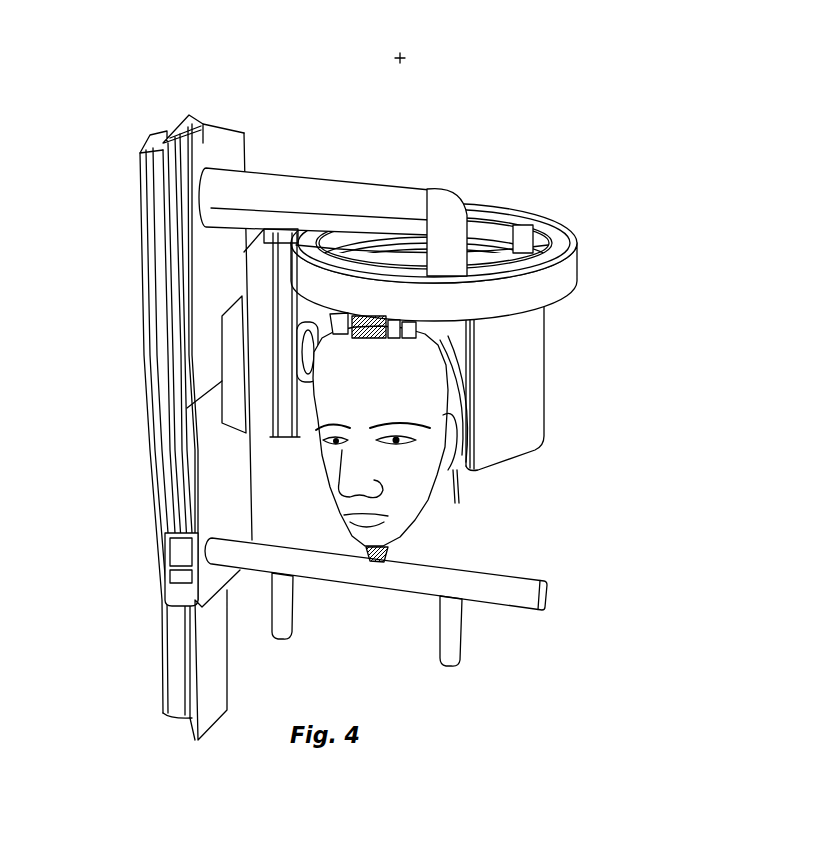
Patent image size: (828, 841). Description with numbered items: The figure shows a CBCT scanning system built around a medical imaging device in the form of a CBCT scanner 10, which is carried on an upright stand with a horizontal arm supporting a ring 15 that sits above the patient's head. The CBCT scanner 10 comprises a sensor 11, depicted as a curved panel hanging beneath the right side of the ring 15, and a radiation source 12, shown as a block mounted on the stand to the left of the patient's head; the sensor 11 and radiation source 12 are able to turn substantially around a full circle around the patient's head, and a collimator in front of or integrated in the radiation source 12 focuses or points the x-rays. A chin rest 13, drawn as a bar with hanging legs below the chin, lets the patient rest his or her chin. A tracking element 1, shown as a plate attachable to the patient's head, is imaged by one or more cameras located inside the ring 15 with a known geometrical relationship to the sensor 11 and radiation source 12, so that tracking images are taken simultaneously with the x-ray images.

The CBCT scanner 10 is at (429, 109).
The ring 15 is at (564, 206).
The sensor 11 is at (572, 363).
The radiation source 12 is at (246, 350).
The tracking element 1 is at (303, 311).
The chin rest 13 is at (411, 552).